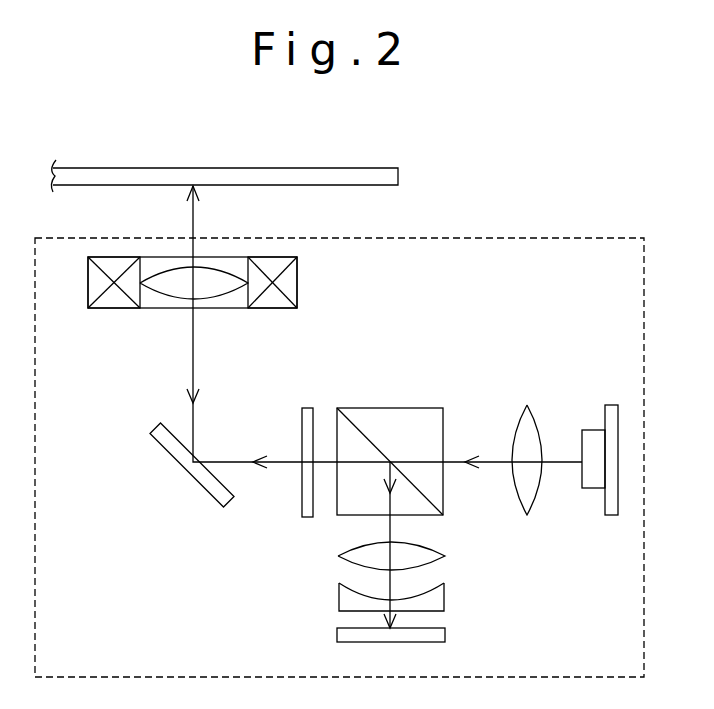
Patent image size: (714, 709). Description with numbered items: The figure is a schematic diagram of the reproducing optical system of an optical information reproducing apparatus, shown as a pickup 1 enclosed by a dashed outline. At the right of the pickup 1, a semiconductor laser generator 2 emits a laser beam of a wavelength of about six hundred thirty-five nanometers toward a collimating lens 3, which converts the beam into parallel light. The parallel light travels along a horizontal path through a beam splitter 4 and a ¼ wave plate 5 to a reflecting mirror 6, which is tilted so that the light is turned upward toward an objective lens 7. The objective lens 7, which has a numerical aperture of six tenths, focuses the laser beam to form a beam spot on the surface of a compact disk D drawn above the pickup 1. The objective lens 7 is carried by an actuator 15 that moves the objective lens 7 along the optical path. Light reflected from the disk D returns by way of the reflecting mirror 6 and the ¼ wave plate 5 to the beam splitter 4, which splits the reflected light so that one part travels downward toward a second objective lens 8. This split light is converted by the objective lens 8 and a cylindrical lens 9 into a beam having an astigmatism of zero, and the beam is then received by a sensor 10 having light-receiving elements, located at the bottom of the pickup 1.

The pickup 1 is at (556, 237).
The semiconductor laser generator 2 is at (592, 430).
The collimating lens 3 is at (532, 410).
The beam splitter 4 is at (411, 408).
The ¼ wave plate 5 is at (306, 408).
The reflecting mirror 6 is at (192, 475).
The objective lens 7 is at (225, 288).
The objective lens 8 is at (430, 549).
The cylindrical lens 9 is at (437, 598).
The sensor 10 is at (447, 636).
The actuator 15 is at (88, 283).
The compact disk D is at (398, 178).